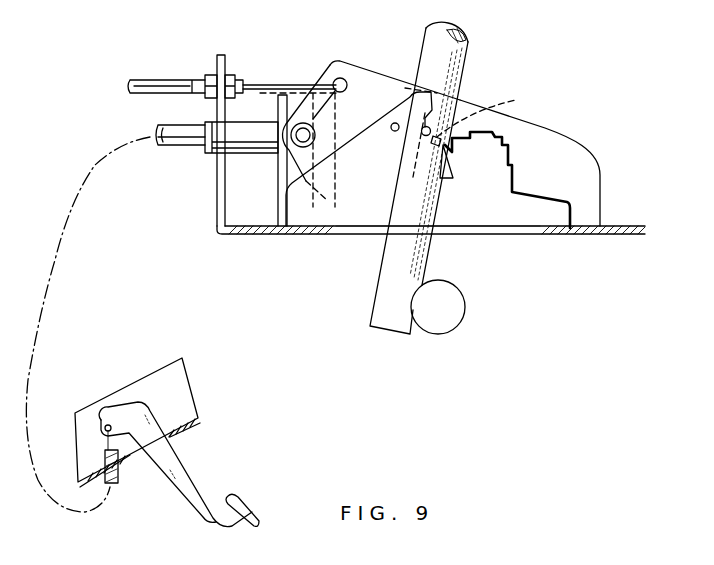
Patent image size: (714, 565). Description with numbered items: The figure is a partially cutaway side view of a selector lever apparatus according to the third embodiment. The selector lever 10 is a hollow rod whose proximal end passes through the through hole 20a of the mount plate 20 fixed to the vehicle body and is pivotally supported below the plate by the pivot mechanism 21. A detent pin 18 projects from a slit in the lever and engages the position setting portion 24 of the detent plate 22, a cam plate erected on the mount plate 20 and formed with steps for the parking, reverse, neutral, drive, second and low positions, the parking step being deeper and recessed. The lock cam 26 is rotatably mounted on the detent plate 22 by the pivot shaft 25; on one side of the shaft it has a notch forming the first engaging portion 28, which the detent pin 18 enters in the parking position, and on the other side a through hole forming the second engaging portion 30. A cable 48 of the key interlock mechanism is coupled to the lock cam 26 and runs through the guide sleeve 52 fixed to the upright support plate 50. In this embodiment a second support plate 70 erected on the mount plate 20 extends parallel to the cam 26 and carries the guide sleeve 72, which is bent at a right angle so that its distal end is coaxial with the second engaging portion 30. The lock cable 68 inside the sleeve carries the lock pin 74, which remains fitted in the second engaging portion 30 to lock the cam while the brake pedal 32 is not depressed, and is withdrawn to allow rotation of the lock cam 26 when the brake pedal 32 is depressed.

The selector lever 10 is at (468, 48).
The detent pin 18 is at (490, 109).
The mount plate 20 is at (617, 235).
The through hole 20a is at (538, 229).
The pivot mechanism 21 is at (456, 313).
The detent plate 22 is at (578, 148).
The position setting portion 24 is at (467, 148).
The pivot shaft 25 is at (393, 120).
The lock cam 26 is at (347, 73).
The first engaging portion 28 is at (430, 112).
The second engaging portion 30 is at (300, 158).
The brake pedal 32 is at (183, 463).
The cable 48 is at (148, 79).
The support plate 50 is at (224, 58).
The guide sleeve 52 is at (203, 76).
The lock cable 68 is at (104, 455).
The support plate 70 is at (283, 97).
The guide sleeve 72 is at (246, 153).
The lock pin 74 is at (305, 122).